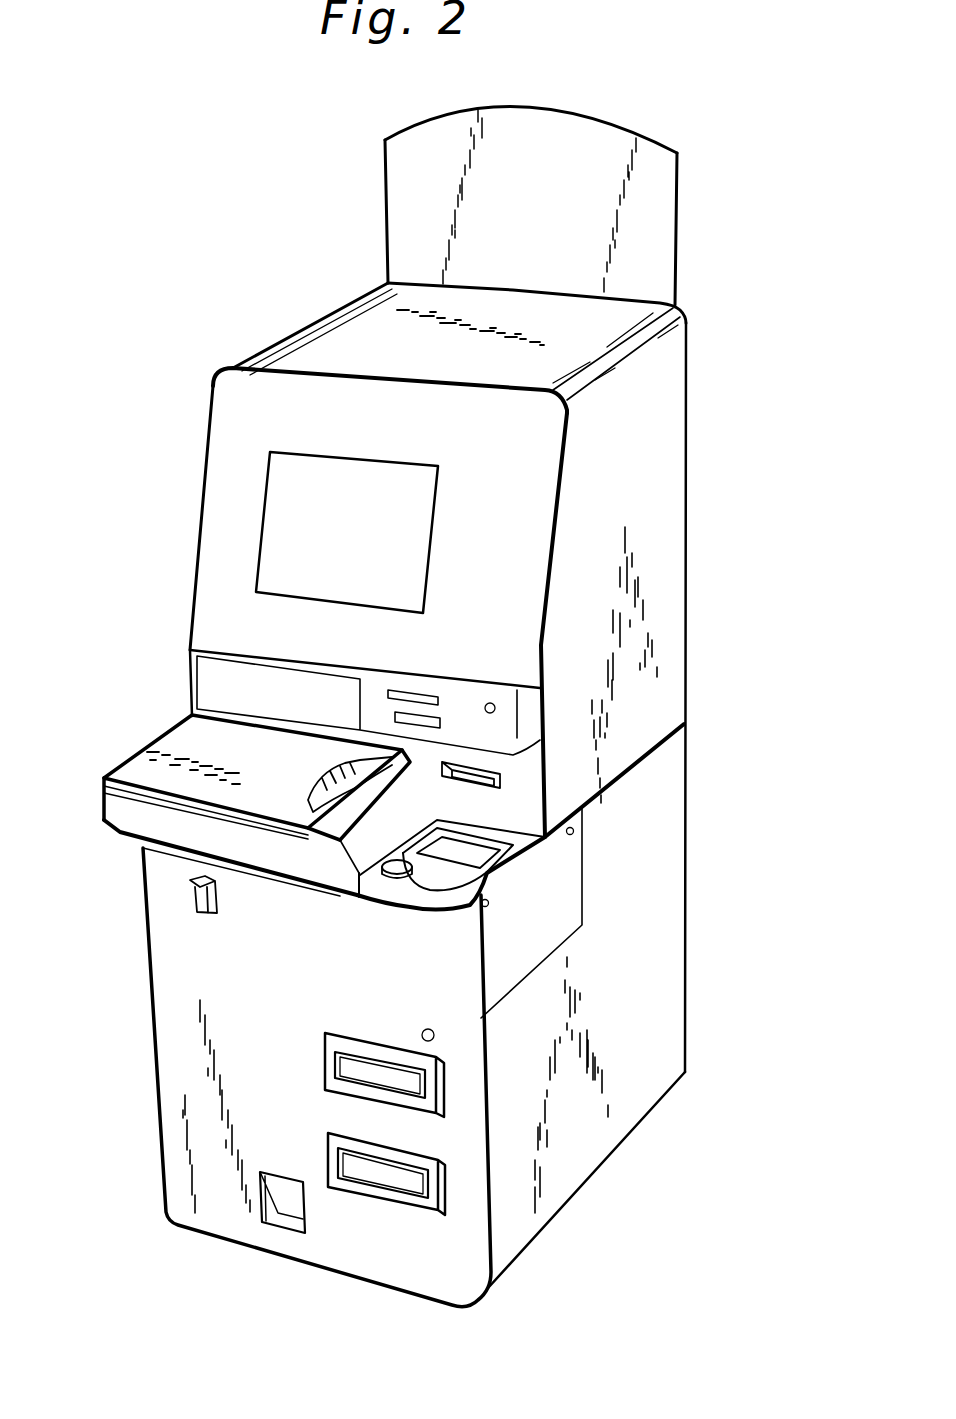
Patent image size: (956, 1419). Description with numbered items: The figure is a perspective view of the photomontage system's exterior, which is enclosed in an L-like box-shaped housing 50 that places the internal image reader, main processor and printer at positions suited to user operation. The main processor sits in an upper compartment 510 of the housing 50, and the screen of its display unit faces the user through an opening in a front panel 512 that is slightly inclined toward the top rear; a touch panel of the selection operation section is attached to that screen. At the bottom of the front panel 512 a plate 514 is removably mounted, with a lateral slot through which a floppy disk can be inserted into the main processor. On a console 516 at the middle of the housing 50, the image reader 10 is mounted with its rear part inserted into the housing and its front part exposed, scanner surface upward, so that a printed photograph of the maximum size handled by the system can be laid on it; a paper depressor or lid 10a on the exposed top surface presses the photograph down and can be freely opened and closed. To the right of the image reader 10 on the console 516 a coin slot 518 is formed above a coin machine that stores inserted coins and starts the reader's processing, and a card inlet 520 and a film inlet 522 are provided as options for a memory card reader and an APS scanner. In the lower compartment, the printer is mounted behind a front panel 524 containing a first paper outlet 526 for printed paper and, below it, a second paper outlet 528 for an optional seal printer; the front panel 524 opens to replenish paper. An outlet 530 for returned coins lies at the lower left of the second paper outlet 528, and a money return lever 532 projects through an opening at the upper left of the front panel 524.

The image reader 10 is at (113, 805).
The paper depressor 10a is at (167, 744).
The housing 50 is at (317, 335).
The upper compartment 510 is at (662, 473).
The front panel 512 is at (218, 468).
The plate 514 is at (467, 701).
The console 516 is at (471, 897).
The coin slot 518 is at (397, 880).
The card inlet 520 is at (483, 783).
The film inlet 522 is at (487, 864).
The front panel 524 is at (435, 1000).
The first paper outlet 526 is at (365, 1069).
The second paper outlet 528 is at (406, 1179).
The outlet for returned coins 530 is at (291, 1198).
The money return lever 532 is at (190, 898).